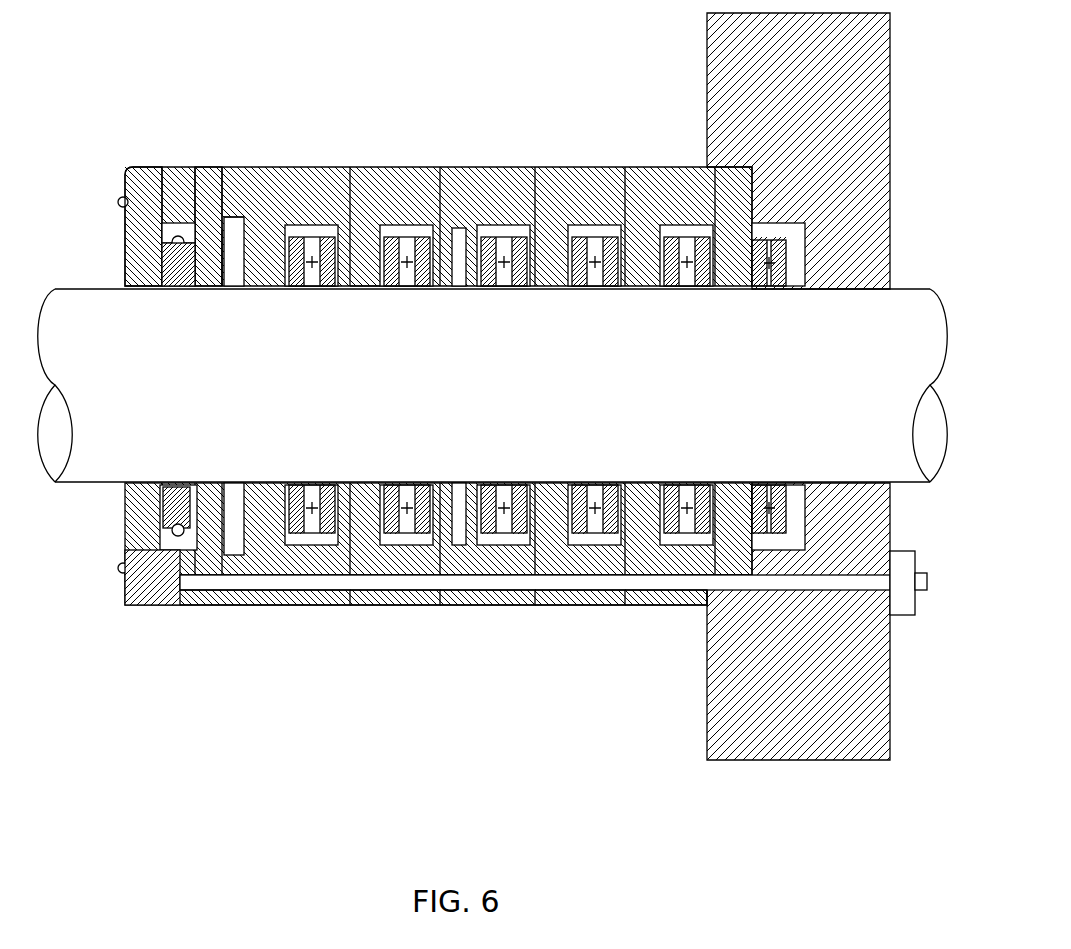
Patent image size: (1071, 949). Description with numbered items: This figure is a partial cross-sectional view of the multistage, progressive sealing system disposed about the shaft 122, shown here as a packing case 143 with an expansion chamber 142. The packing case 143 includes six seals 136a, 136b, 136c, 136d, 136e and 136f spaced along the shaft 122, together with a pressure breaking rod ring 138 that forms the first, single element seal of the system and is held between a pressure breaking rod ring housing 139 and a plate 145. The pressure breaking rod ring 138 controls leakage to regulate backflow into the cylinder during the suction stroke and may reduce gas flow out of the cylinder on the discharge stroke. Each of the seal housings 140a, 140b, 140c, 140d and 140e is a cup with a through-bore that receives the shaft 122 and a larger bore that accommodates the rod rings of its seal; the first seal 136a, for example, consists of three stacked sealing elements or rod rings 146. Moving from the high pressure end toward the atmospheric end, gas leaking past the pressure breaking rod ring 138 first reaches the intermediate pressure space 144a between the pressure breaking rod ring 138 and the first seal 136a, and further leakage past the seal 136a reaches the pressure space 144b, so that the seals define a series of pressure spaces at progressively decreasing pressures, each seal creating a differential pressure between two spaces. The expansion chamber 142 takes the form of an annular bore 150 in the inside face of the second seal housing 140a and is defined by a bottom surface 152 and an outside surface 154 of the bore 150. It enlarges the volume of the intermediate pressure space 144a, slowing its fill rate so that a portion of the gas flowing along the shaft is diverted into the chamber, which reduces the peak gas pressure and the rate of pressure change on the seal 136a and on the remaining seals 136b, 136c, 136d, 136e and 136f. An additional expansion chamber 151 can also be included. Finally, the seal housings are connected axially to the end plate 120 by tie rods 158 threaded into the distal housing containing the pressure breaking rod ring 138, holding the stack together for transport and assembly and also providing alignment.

The end plate 120 is at (827, 110).
The shaft 122 is at (500, 395).
The packing case 143 is at (98, 136).
The pressure breaking rod ring 138 is at (163, 225).
The pressure breaking rod ring housing 139 is at (157, 603).
The plate 145 is at (210, 175).
The annular bore 150 is at (240, 228).
The bottom surface 152 is at (232, 222).
The outside surface 154 is at (217, 290).
The intermediate pressure space 144a is at (270, 293).
The pressure space 144b is at (372, 293).
The first seal 136a is at (340, 236).
The seal 136b is at (436, 245).
The seal 136c is at (524, 248).
The seal 136d is at (612, 250).
The seal 136e is at (702, 250).
The seal 136f is at (770, 242).
The additional expansion chamber 151 is at (458, 232).
The rod rings 146 is at (430, 512).
The expansion chamber 142 is at (242, 549).
The tie rods 158 is at (355, 582).
The seal housing 140a is at (292, 603).
The seal housing 140b is at (413, 603).
The seal housing 140c is at (490, 597).
The seal housing 140d is at (563, 597).
The seal housing 140e is at (658, 597).